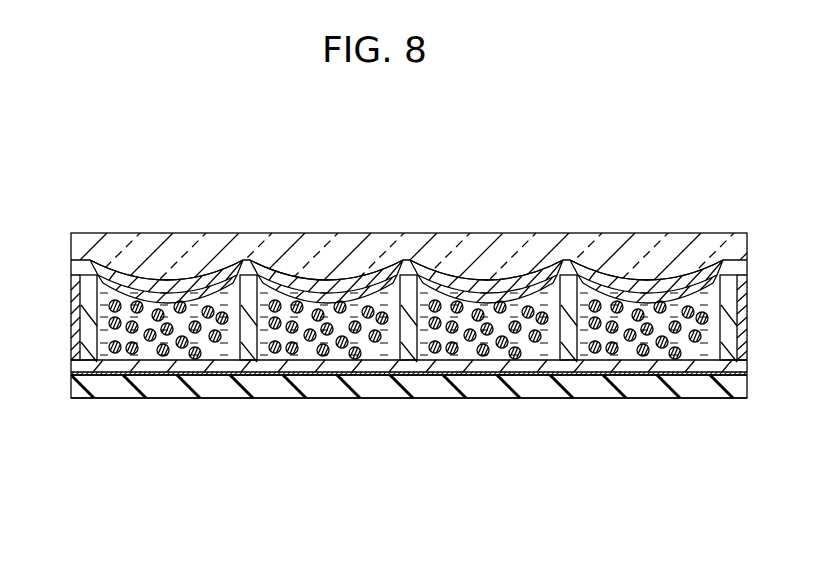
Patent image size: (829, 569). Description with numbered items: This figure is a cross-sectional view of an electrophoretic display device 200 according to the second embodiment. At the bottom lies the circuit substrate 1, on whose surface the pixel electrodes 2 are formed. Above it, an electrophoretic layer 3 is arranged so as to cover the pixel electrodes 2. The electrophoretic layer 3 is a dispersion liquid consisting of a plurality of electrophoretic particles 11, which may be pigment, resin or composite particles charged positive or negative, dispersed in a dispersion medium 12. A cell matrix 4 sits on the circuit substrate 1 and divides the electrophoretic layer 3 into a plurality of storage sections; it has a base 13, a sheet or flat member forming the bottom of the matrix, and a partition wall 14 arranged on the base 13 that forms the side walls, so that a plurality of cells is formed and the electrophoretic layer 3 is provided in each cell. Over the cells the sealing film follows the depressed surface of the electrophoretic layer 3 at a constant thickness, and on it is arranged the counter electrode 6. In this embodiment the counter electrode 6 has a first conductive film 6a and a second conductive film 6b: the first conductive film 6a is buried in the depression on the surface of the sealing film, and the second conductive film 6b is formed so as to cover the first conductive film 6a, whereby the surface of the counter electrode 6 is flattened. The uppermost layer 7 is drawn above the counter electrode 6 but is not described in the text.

The electrophoretic display device 200 is at (85, 211).
The protective substrate 7 is at (228, 253).
The cell matrix 4 is at (477, 215).
The partition wall 14 is at (408, 283).
The base 13 is at (470, 292).
The counter electrode 6 is at (646, 215).
The second conductive film 6b is at (633, 273).
The first conductive film 6a is at (673, 283).
The electrophoretic layer 3 is at (498, 384).
The electrophoretic particles 11 is at (477, 300).
The dispersion medium 12 is at (548, 340).
The pixel electrodes 2 is at (440, 378).
The circuit substrate 1 is at (380, 390).